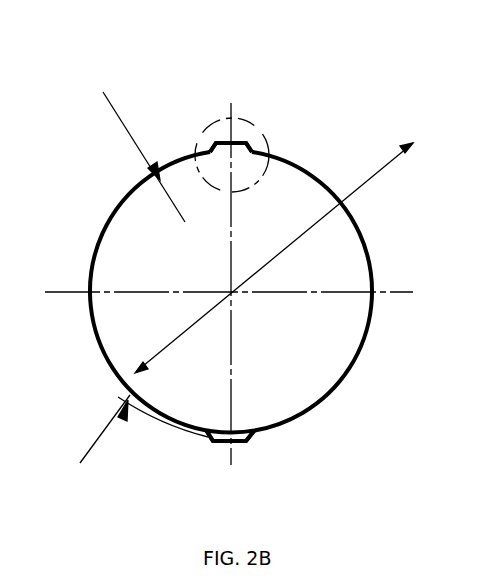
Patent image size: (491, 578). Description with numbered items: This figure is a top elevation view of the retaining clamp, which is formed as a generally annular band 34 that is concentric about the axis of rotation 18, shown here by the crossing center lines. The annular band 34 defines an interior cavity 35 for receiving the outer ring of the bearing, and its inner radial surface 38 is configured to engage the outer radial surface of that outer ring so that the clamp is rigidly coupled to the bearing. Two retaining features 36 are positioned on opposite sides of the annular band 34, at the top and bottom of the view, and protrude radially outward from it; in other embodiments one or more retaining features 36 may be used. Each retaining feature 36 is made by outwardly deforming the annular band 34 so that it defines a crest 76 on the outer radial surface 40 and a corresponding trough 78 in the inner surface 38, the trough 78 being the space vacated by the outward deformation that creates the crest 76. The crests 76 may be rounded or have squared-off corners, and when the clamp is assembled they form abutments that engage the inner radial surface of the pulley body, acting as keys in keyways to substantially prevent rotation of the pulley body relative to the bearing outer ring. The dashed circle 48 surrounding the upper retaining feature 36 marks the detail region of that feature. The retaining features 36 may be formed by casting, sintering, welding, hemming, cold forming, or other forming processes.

The axis of rotation 18 is at (236, 298).
The annular band 34 is at (387, 237).
The interior cavity 35 is at (275, 220).
The retaining features 36 is at (223, 120).
The inner radial surface 38 is at (335, 378).
The outer radial surface 40 is at (368, 336).
The detail region 48 is at (213, 187).
The crest 76 is at (243, 112).
The trough 78 is at (230, 430).